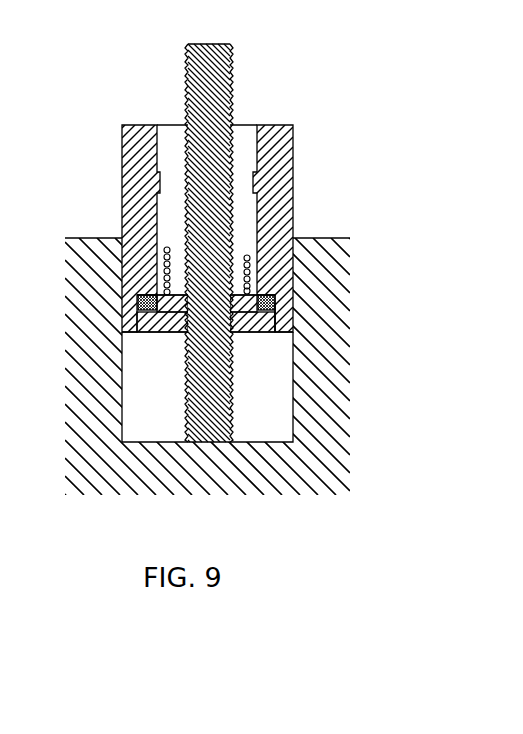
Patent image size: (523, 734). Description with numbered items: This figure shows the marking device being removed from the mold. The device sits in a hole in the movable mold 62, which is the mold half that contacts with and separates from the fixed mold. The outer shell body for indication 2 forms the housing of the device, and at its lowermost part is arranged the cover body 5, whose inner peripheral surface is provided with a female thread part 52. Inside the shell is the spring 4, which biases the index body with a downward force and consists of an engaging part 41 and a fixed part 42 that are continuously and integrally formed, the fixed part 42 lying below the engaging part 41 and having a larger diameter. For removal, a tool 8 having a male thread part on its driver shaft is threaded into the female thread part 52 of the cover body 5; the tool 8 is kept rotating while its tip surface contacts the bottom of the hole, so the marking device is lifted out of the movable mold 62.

The tool 8 is at (187, 78).
The outer shell body for indication 2 is at (268, 125).
The movable mold 62 is at (317, 238).
The spring 4 is at (236, 325).
The engaging part 41 is at (247, 259).
The fixed part 42 is at (262, 300).
The cover body 5 is at (213, 329).
The female thread part 52 is at (188, 310).